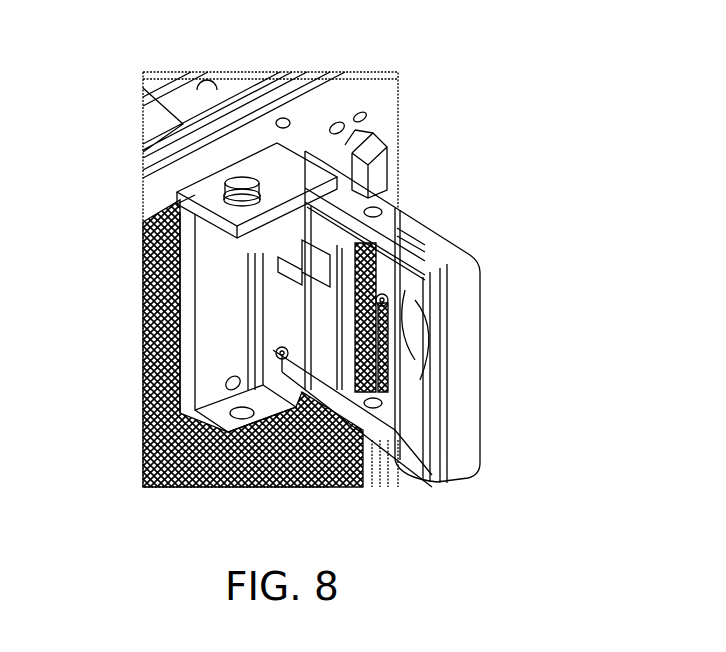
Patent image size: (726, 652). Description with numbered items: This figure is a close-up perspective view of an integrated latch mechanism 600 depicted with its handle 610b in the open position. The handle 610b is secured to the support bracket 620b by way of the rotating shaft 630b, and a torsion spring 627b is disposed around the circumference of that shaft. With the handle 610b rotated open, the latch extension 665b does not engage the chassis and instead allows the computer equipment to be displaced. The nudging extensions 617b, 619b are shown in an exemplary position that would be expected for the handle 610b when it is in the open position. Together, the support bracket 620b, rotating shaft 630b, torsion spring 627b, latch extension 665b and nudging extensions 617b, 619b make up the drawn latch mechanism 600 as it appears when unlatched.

The integrated latch mechanism 600 is at (568, 62).
The handle 610b is at (465, 333).
The nudging extension 617b is at (232, 214).
The nudging extension 619b is at (281, 490).
The support bracket 620b is at (218, 313).
The torsion spring 627b is at (410, 252).
The rotating shaft 630b is at (372, 343).
The latch extension 665b is at (395, 187).